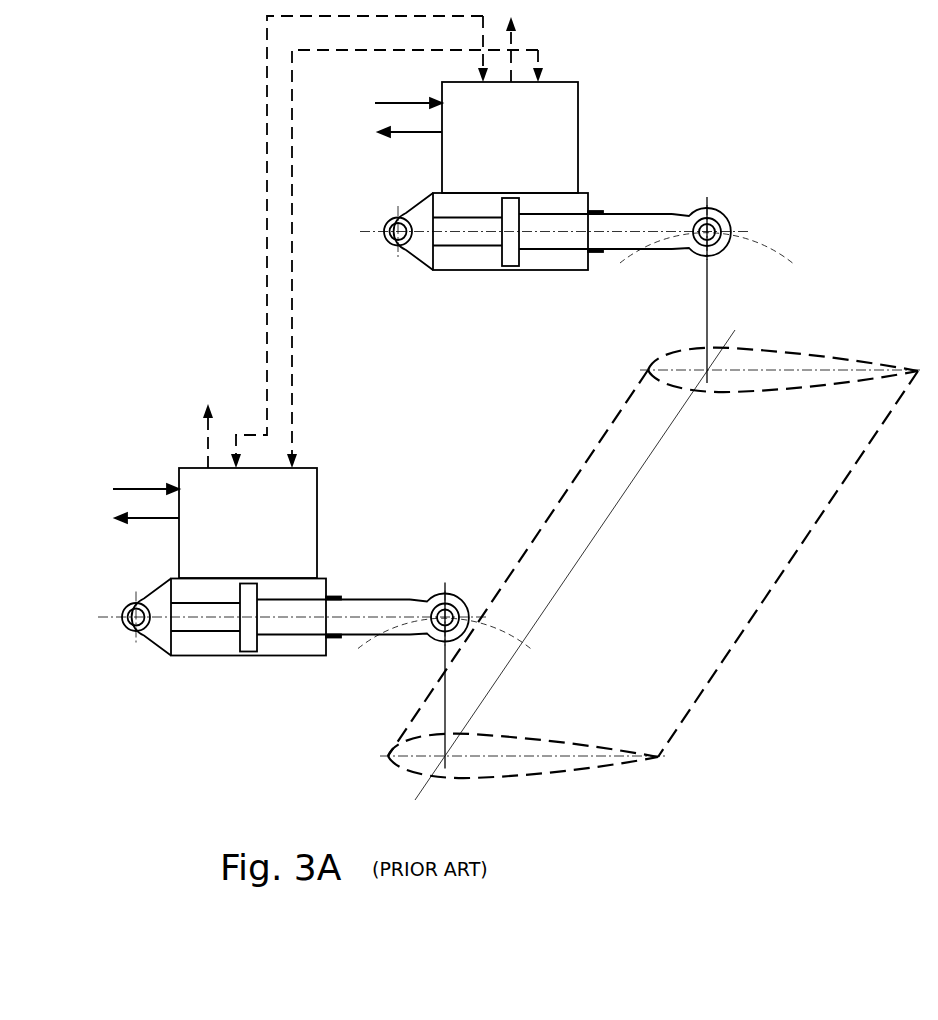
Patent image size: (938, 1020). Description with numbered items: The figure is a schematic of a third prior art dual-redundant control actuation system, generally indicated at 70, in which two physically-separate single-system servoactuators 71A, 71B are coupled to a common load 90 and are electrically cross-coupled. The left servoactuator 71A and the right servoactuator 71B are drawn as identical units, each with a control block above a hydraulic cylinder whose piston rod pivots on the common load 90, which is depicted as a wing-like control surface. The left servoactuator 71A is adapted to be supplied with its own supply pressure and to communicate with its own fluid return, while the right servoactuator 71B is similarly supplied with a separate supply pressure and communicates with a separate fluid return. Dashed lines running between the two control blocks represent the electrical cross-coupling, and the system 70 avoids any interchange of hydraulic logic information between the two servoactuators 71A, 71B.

The dual-redundant control actuation system 70 is at (165, 252).
The left servoactuator 71A is at (222, 529).
The right servoactuator 71B is at (485, 144).
The common load 90 is at (573, 520).